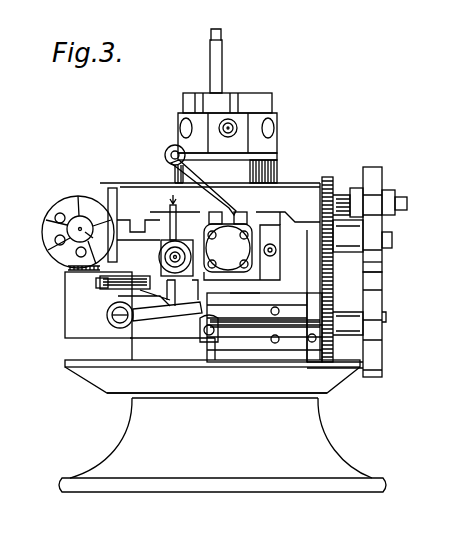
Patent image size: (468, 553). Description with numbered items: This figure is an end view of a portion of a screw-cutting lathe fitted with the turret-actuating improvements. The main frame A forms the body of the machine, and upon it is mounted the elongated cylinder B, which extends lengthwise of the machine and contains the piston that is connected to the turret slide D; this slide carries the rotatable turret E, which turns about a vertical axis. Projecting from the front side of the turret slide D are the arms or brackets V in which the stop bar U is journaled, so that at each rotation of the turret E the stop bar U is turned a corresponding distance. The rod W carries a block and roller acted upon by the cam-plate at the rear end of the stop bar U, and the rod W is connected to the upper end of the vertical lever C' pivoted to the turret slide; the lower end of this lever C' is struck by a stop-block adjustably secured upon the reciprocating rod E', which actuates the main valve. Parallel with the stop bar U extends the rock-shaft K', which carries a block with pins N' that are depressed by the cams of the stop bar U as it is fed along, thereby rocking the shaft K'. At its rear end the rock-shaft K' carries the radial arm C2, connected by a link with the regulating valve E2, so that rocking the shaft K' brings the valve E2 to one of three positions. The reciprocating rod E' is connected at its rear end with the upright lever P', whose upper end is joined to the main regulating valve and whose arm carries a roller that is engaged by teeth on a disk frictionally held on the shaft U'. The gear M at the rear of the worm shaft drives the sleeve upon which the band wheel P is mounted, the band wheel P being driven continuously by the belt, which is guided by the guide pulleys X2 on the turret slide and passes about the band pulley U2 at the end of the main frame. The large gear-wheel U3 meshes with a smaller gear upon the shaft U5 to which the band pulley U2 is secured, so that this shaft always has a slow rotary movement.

The main frame A is at (272, 390).
The rotatable turret E is at (238, 106).
The rod W is at (116, 193).
The turret slide D is at (235, 206).
The cylinder B is at (242, 246).
The vertical lever C' is at (150, 232).
The stop bar U is at (64, 232).
The arms or brackets V is at (84, 217).
The pins N' is at (55, 271).
The upright lever P' is at (125, 268).
The reciprocating rod E' is at (87, 292).
The rock-shaft K' is at (102, 315).
The radial arm C2 is at (168, 316).
The shaft U' is at (264, 327).
The regulating valve E2 is at (239, 299).
The gear M is at (324, 257).
The band wheel P is at (370, 208).
The guide pulleys X2 is at (382, 260).
The band pulley U2 is at (383, 324).
The shaft U5 is at (386, 318).
The large gear-wheel U3 is at (340, 302).